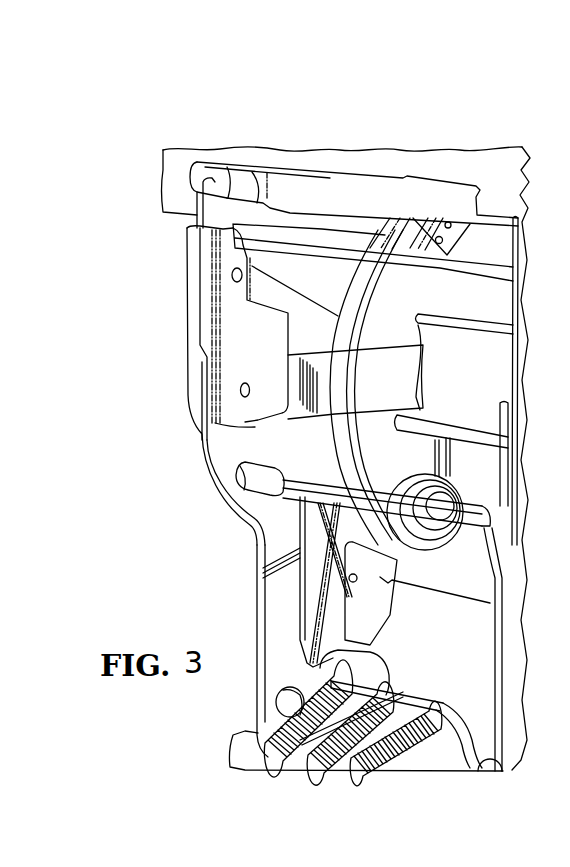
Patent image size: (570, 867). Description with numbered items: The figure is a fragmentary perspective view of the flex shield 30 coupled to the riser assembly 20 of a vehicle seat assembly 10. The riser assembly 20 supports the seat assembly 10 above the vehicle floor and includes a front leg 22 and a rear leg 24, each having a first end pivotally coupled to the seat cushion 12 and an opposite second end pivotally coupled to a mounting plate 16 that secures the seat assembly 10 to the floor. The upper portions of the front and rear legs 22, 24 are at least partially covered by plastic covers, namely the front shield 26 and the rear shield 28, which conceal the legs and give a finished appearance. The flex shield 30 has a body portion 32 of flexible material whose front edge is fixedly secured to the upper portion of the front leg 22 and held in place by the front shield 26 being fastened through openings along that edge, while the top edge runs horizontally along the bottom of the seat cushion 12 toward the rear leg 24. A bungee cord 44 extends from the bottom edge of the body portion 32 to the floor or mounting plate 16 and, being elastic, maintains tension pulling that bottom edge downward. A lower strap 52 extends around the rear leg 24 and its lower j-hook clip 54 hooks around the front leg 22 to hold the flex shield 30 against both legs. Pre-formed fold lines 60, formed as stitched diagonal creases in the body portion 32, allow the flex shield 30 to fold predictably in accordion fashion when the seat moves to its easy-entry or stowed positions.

The seat assembly 10 is at (144, 104).
The seat cushion 12 is at (448, 149).
The mounting plate 16 is at (247, 752).
The riser assembly 20 is at (220, 534).
The front leg 22 is at (217, 452).
The rear leg 24 is at (402, 447).
The front shield 26 is at (156, 279).
The rear shield 28 is at (432, 297).
The flex shield 30 is at (322, 226).
The body portion 32 is at (334, 283).
The bungee cord 44 is at (345, 590).
The lower strap 52 is at (352, 390).
The lower j-hook clip 54 is at (255, 420).
The fold lines 60 is at (293, 284).